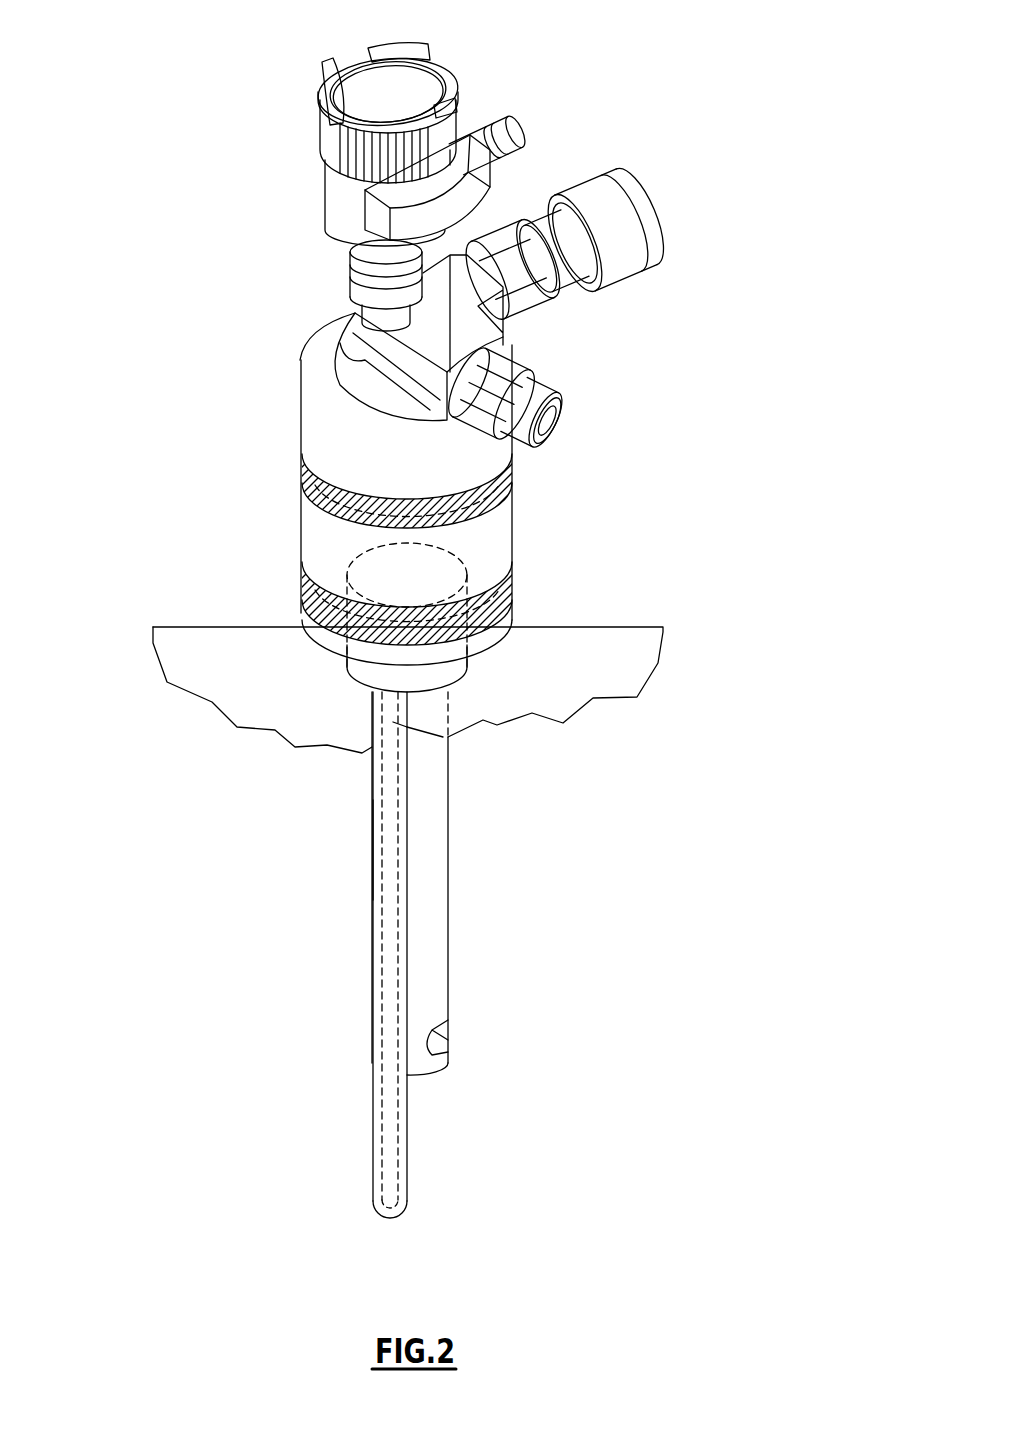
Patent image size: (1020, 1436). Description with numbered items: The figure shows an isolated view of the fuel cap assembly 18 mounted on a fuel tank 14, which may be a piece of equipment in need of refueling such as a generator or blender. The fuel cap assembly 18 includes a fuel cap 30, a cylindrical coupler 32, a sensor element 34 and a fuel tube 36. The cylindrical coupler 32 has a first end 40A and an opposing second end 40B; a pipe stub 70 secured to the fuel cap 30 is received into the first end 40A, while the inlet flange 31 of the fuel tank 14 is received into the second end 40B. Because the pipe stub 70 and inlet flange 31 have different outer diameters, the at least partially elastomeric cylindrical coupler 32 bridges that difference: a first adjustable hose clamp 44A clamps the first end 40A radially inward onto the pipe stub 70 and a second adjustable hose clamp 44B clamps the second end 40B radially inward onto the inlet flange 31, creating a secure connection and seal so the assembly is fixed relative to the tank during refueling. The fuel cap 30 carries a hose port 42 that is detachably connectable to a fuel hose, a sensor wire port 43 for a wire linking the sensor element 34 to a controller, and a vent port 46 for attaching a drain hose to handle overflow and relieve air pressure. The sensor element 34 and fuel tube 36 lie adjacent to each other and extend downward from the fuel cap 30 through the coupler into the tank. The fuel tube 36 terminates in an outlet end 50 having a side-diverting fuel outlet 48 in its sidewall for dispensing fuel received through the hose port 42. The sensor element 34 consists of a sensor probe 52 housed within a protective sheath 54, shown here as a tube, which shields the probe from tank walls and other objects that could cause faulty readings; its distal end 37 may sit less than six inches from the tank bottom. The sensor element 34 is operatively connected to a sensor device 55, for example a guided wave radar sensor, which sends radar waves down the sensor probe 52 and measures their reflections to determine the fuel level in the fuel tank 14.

The fuel tank 14 is at (187, 658).
The fuel cap assembly 18 is at (705, 58).
The fuel cap 30 is at (316, 424).
The inlet flange 31 is at (362, 670).
The cylindrical coupler 32 is at (498, 542).
The sensor element 34 is at (357, 798).
The fuel tube 36 is at (449, 748).
The distal end 37 is at (405, 1223).
The first end 40A is at (375, 494).
The second end 40B is at (490, 648).
The hose port 42 is at (654, 188).
The sensor wire port 43 is at (521, 124).
The first adjustable hose clamp 44A is at (330, 539).
The second adjustable hose clamp 44B is at (317, 613).
The vent port 46 is at (565, 444).
The fuel outlet 48 is at (448, 1034).
The outlet end 50 is at (438, 1083).
The sensor probe 52 is at (382, 930).
The protective sheath 54 is at (373, 860).
The sensor device 55 is at (340, 214).
The pipe stub 70 is at (342, 545).